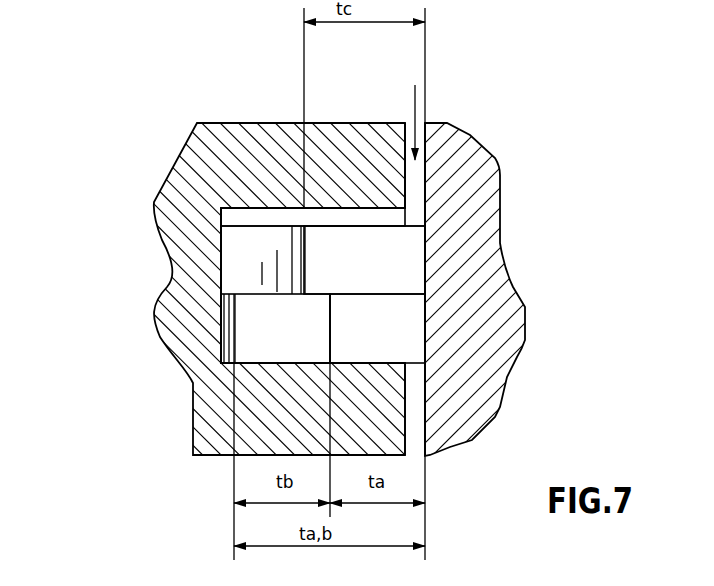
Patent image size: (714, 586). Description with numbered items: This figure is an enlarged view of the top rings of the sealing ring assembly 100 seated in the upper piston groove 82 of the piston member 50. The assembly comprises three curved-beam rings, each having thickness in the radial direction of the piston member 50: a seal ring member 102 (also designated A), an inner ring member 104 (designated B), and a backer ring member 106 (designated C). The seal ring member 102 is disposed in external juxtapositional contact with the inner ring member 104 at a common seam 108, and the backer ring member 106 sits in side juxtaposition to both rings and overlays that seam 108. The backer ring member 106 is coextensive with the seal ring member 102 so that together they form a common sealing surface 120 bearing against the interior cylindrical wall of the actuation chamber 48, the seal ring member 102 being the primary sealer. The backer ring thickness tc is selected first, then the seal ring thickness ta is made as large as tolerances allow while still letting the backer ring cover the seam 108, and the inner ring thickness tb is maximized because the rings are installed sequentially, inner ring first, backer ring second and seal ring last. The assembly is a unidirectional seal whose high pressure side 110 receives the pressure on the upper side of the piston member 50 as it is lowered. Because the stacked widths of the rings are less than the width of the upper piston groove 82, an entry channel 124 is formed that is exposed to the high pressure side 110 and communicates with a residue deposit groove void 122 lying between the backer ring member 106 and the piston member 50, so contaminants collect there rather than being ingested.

The actuation chamber 48 is at (460, 183).
The piston member 50 is at (163, 323).
The upper piston groove 82 is at (218, 333).
The sealing ring assembly 100 is at (206, 472).
The seal ring member 102 is at (396, 317).
The inner ring member 104 is at (281, 344).
The backer ring member 106 is at (398, 247).
The common seam 108 is at (330, 332).
The high pressure side 110 is at (413, 108).
The common sealing surface 120 is at (427, 271).
The residue deposit groove void 122 is at (242, 257).
The entry channel 124 is at (268, 206).